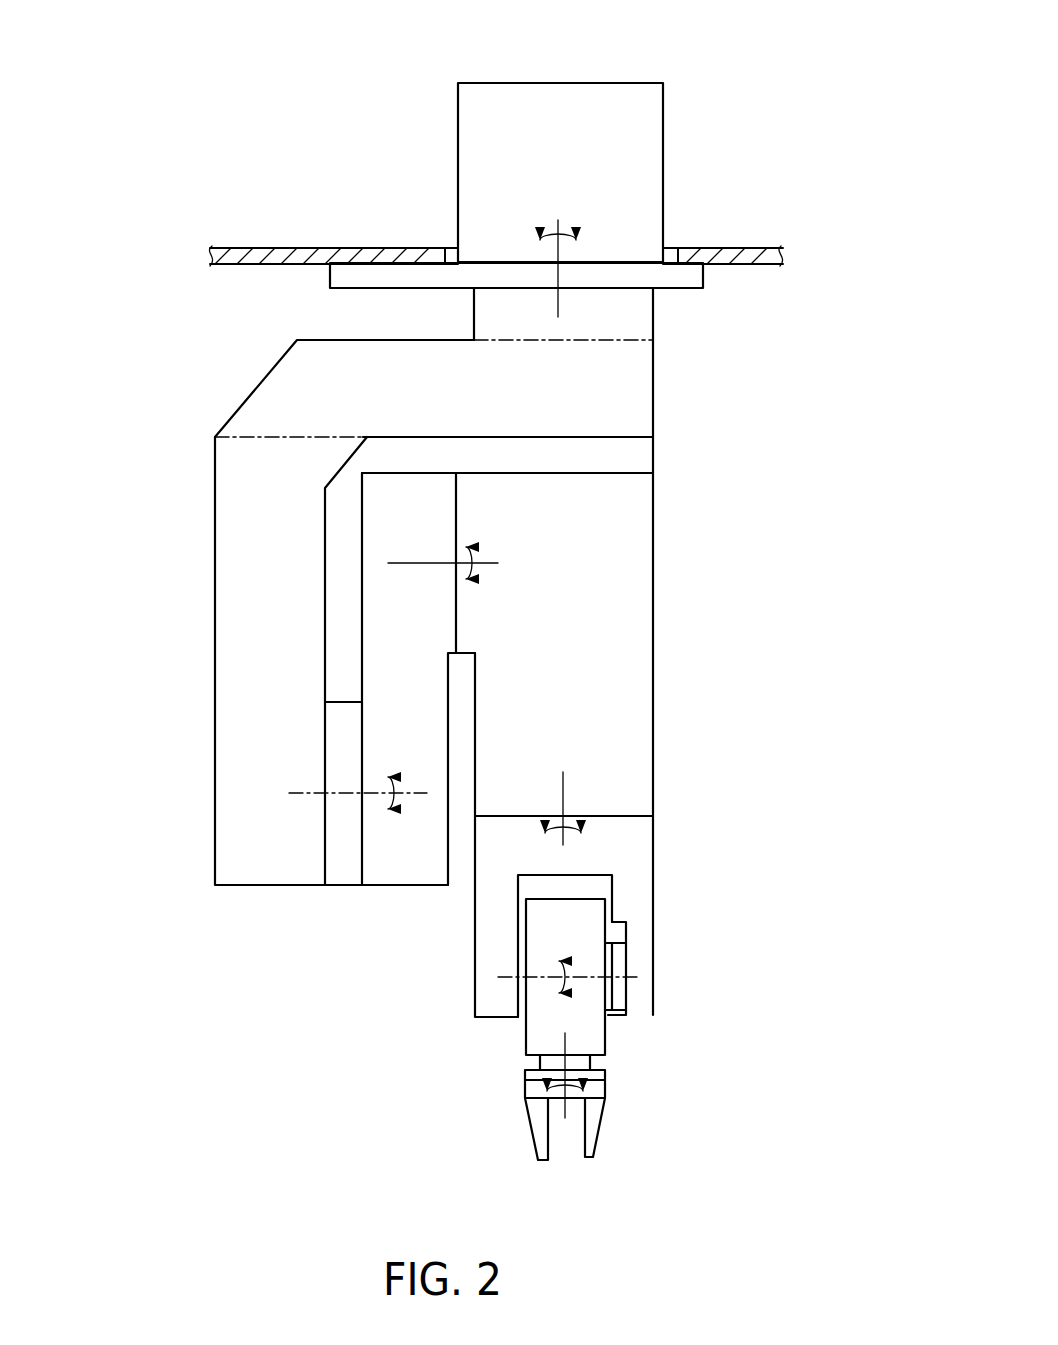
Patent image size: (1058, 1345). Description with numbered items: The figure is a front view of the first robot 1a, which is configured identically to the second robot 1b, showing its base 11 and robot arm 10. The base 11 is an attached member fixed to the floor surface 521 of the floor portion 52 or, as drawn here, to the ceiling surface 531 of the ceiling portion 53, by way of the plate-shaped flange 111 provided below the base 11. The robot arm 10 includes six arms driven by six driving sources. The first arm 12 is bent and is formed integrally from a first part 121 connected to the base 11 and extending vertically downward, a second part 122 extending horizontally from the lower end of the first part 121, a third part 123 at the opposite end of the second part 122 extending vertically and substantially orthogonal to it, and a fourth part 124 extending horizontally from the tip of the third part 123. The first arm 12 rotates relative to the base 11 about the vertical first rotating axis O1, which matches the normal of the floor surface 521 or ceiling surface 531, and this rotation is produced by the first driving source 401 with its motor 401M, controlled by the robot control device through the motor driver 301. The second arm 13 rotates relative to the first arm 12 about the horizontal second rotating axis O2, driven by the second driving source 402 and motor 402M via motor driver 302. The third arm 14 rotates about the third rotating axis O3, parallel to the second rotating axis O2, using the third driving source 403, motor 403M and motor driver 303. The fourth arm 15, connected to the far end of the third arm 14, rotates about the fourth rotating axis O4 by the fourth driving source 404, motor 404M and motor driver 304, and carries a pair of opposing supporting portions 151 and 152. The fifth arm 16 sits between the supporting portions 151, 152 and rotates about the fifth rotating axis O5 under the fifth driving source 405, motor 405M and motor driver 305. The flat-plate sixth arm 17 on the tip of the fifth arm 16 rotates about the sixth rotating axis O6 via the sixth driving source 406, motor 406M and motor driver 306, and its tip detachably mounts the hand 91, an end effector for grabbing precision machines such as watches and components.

The first robot 1a is at (442, 589).
The second robot 1b is at (442, 589).
The robot arm 10 is at (723, 88).
The base 11 is at (519, 140).
The flange 111 is at (690, 277).
The first arm 12 is at (100, 293).
The first part 121 is at (454, 328).
The second part 122 is at (280, 395).
The third part 123 is at (275, 684).
The fourth part 124 is at (338, 737).
The second arm 13 is at (397, 887).
The third arm 14 is at (594, 563).
The fourth arm 15 is at (585, 838).
The supporting portion 151 is at (495, 957).
The supporting portion 152 is at (702, 961).
The fifth arm 16 is at (525, 1032).
The sixth arm 17 is at (612, 1073).
The hand 91 is at (603, 1138).
The floor portion 52 is at (440, 217).
The ceiling portion 53 is at (440, 217).
The floor surface 521 is at (277, 233).
The ceiling surface 531 is at (265, 255).
The motor driver 301 is at (519, 140).
The motor driver 302 is at (519, 140).
The motor driver 303 is at (519, 140).
The motor driver 304 is at (519, 140).
The motor driver 305 is at (519, 140).
The motor driver 306 is at (716, 127).
The motor 401M is at (454, 328).
The first driving source 401 is at (615, 314).
The motor 402M is at (275, 684).
The second driving source 402 is at (267, 830).
The motor 403M is at (594, 563).
The third driving source 403 is at (517, 566).
The motor 404M is at (698, 726).
The fourth driving source 404 is at (567, 700).
The motor 405M is at (650, 856).
The fifth driving source 405 is at (570, 847).
The motor 406M is at (702, 961).
The sixth driving source 406 is at (582, 967).
The first rotating axis O1 is at (558, 275).
The second rotating axis O2 is at (310, 792).
The third rotating axis O3 is at (480, 563).
The fourth rotating axis O4 is at (565, 788).
The fifth rotating axis O5 is at (615, 977).
The sixth rotating axis O6 is at (568, 1033).